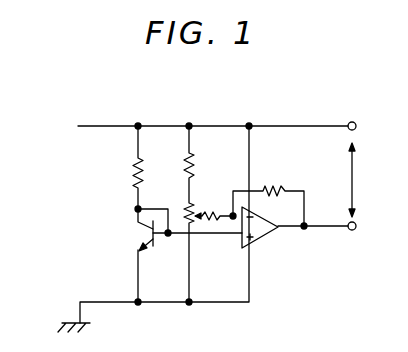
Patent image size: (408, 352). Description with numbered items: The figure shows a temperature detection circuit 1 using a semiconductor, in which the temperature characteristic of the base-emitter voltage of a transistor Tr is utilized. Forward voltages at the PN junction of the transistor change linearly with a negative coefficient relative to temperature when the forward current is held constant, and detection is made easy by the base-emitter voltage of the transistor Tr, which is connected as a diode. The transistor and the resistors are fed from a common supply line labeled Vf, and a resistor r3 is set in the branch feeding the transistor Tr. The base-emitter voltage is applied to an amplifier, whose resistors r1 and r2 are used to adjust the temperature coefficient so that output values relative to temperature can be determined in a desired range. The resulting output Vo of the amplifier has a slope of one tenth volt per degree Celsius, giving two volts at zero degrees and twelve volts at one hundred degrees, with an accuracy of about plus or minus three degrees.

The constant current circuit 1 is at (112, 233).
The transistor Tr is at (149, 245).
The resistor r1 is at (213, 212).
The resistor r2 is at (268, 190).
The resistor r3 is at (187, 202).
The reference voltage input Vf is at (194, 126).
The output Vo is at (339, 180).
The element amplifier is at (263, 237).